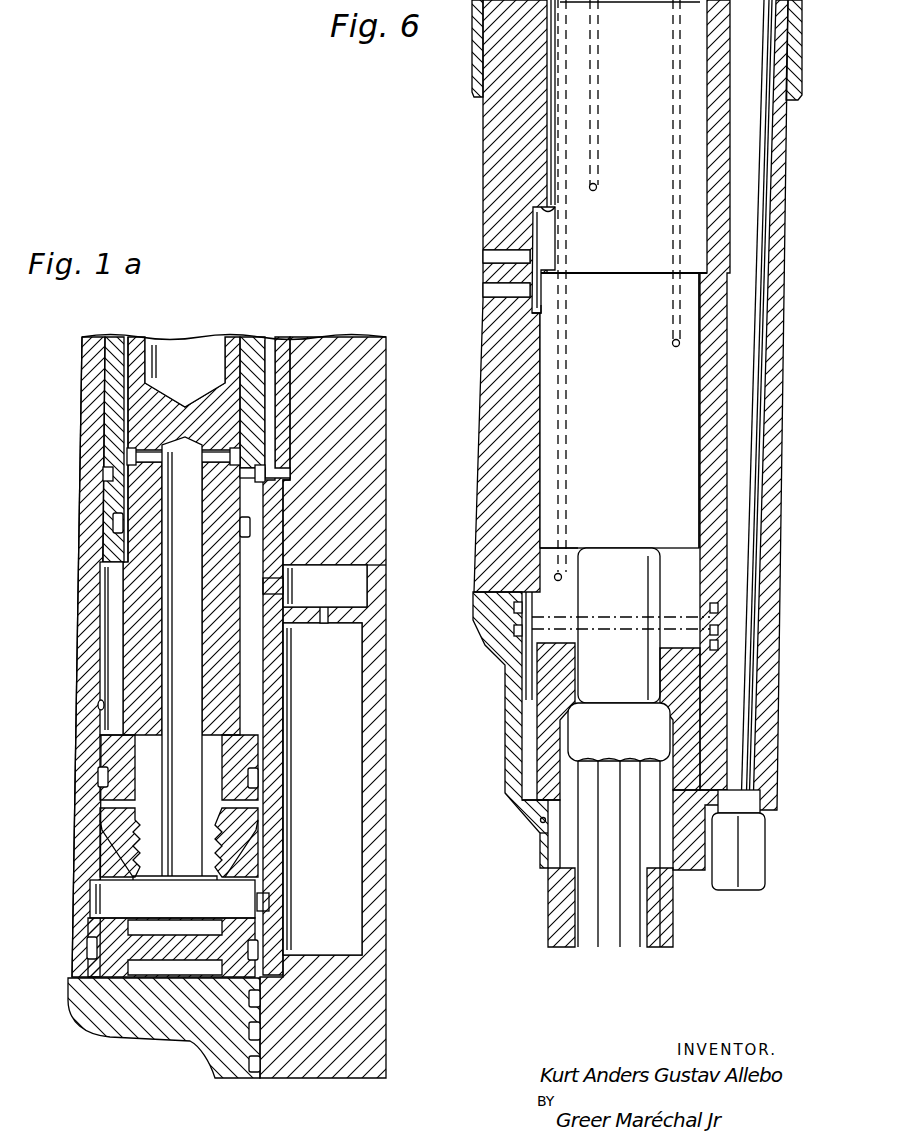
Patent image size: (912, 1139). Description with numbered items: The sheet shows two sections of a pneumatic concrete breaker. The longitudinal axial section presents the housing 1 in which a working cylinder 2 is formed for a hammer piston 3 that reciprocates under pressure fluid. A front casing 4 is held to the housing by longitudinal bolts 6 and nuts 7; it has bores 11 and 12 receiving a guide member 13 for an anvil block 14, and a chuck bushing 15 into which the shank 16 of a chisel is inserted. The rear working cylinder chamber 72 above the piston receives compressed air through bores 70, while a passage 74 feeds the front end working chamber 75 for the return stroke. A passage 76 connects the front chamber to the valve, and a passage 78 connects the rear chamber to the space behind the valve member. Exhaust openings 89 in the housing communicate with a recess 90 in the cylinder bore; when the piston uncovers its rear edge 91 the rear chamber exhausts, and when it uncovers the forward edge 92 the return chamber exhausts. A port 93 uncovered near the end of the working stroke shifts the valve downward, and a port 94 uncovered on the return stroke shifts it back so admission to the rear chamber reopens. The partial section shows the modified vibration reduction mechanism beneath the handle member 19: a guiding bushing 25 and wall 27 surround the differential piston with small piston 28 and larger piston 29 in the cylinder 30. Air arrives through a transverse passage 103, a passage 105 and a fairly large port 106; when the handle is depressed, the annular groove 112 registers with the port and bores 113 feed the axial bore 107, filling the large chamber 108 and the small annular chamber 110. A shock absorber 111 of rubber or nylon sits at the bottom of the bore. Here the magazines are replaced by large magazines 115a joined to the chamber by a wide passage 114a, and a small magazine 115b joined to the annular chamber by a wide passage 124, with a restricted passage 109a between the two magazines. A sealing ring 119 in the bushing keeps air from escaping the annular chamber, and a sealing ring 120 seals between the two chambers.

In FIG. 1A, the housing 1 is at (80, 606).
In FIG. 6, the housing 1 is at (783, 338).
In FIG. 6, the working cylinder 2 is at (548, 88).
In FIG. 6, the hammer piston 3 is at (600, 284).
In FIG. 1A, the front casing 4 is at (136, 1040).
In FIG. 6, the front casing 4 is at (500, 664).
In FIG. 6, the longitudinal bolts 6 is at (752, 530).
In FIG. 6, the nuts 7 is at (755, 858).
In FIG. 6, the bore 11 is at (545, 828).
In FIG. 6, the bore 12 is at (523, 722).
In FIG. 6, the guide member 13 is at (526, 772).
In FIG. 6, the anvil block 14 is at (620, 556).
In FIG. 6, the chuck bushing 15 is at (566, 874).
In FIG. 6, the shank 16 is at (608, 782).
In FIG. 6, the handle member 19 is at (790, 40).
In FIG. 1A, the guiding bushing 25 is at (113, 412).
In FIG. 1A, the outer wall 27 is at (105, 367).
In FIG. 1A, the small piston 28 is at (135, 645).
In FIG. 1A, the piston 29 is at (118, 796).
In FIG. 1A, the cylinder 30 is at (98, 706).
In FIG. 6, the bores 70 is at (566, 102).
In FIG. 6, the rear working cylinder chamber 72 is at (636, 20).
In FIG. 6, the passage 74 is at (562, 442).
In FIG. 6, the front end working chamber 75 is at (550, 560).
In FIG. 6, the passage 76 is at (668, 304).
In FIG. 6, the passage 78 is at (592, 112).
In FIG. 6, the exhaust openings 89 is at (495, 256).
In FIG. 6, the recess 90 is at (547, 241).
In FIG. 6, the rear edge 91 is at (553, 214).
In FIG. 6, the forward edge 92 is at (541, 309).
In FIG. 6, the port 93 is at (597, 186).
In FIG. 6, the port 94 is at (674, 348).
In FIG. 1A, the transverse passage 103 is at (250, 1030).
In FIG. 6, the transverse passage 103 is at (720, 628).
In FIG. 1A, the passage 105 is at (283, 395).
In FIG. 1A, the port 106 is at (253, 452).
In FIG. 1A, the axial bore 107 is at (125, 552).
In FIG. 1A, the chamber 108 is at (110, 892).
In FIG. 1A, the restricted passage 109a is at (330, 625).
In FIG. 1A, the annular chamber 110 is at (100, 637).
In FIG. 1A, the shock absorber 111 is at (92, 975).
In FIG. 1A, the annular groove 112 is at (128, 456).
In FIG. 1A, the bores 113 is at (148, 466).
In FIG. 1A, the wide passage 114a is at (268, 902).
In FIG. 1A, the large magazines 115a is at (366, 906).
In FIG. 1A, the small magazine 115b is at (368, 580).
In FIG. 1A, the sealing ring 119 is at (113, 522).
In FIG. 1A, the sealing ring 120 is at (100, 778).
In FIG. 1A, the wide passage 124 is at (283, 590).